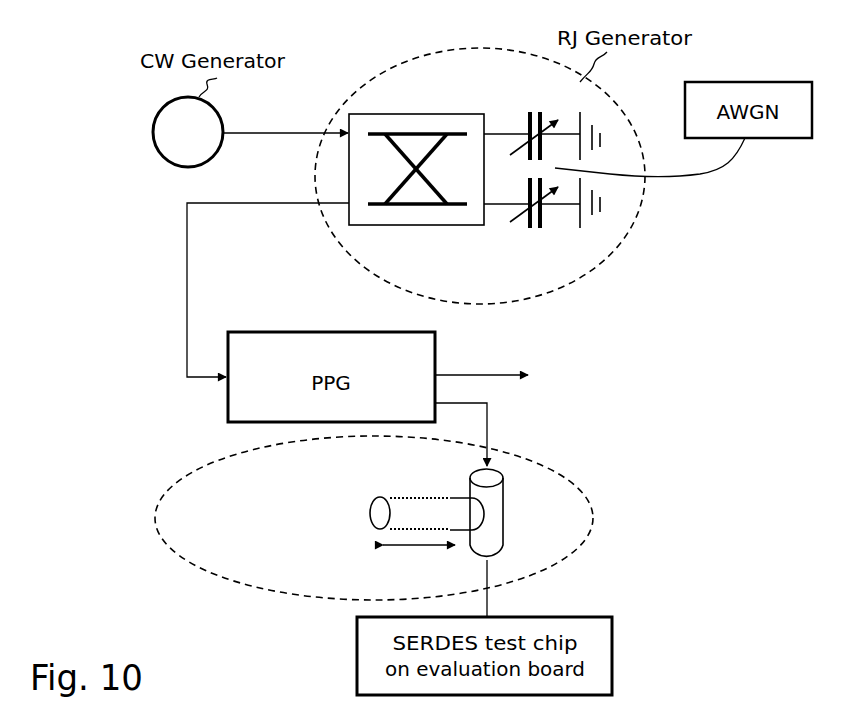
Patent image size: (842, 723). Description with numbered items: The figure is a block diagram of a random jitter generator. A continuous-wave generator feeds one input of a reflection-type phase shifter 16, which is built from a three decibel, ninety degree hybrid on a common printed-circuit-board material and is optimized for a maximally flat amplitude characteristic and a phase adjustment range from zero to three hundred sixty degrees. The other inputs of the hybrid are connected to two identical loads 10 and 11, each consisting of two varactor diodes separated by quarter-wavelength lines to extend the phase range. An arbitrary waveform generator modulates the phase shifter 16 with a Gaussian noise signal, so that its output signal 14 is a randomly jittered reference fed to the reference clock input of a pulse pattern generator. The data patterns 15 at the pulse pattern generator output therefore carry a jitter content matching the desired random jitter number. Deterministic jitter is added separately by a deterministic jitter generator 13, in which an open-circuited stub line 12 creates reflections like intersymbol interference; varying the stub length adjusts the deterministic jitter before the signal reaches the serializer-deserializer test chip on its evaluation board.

The load 10 is at (542, 120).
The load 11 is at (542, 220).
The open-circuited stub line 12 is at (371, 516).
The deterministic jitter generator 13 is at (405, 526).
The output signal 14 is at (252, 290).
The data patterns 15 is at (480, 402).
The reflection-type phase shifter 16 is at (415, 217).